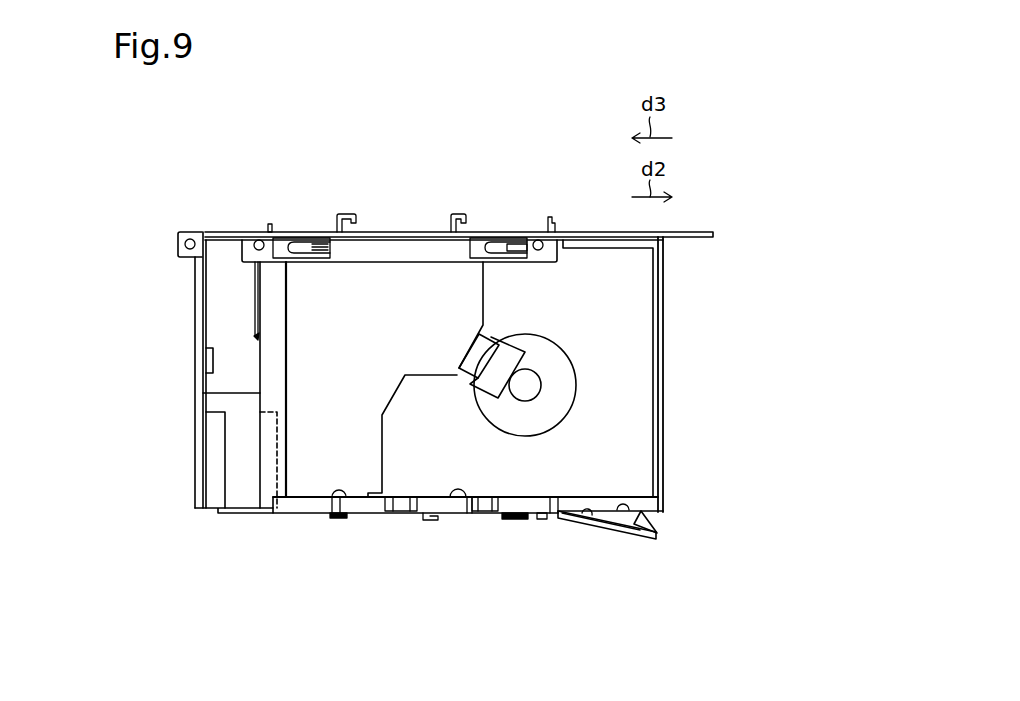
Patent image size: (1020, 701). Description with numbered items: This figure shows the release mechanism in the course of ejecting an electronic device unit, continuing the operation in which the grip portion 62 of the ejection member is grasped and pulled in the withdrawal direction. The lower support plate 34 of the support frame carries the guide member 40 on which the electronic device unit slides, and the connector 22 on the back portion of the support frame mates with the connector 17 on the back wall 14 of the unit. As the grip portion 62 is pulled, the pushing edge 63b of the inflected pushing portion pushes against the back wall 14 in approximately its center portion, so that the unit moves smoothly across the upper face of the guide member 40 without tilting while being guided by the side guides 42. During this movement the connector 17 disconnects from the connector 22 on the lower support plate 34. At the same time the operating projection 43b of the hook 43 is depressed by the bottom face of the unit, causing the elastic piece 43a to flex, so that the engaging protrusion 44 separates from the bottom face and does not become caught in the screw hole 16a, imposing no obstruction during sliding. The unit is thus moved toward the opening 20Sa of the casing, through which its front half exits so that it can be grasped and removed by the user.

The grip portion 62 is at (678, 232).
The pushing edge 63b is at (257, 337).
The opening 20Sa is at (587, 352).
The lower support plate 34 is at (195, 383).
The back wall 14 is at (203, 393).
The connector 17 is at (275, 433).
The connector 22 is at (215, 465).
The guide member 40 is at (380, 514).
The side guide 42 is at (452, 512).
The engaging protrusion 44 is at (590, 518).
The elastic piece 43a is at (596, 528).
The hook 43 is at (627, 531).
The operating projection 43b is at (645, 530).
The screw hole 16a is at (620, 506).